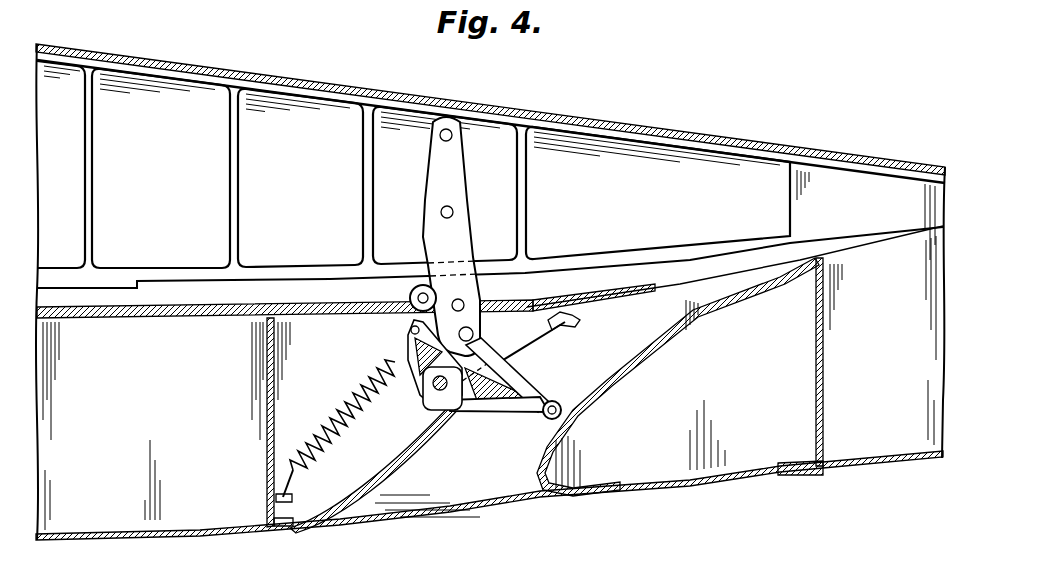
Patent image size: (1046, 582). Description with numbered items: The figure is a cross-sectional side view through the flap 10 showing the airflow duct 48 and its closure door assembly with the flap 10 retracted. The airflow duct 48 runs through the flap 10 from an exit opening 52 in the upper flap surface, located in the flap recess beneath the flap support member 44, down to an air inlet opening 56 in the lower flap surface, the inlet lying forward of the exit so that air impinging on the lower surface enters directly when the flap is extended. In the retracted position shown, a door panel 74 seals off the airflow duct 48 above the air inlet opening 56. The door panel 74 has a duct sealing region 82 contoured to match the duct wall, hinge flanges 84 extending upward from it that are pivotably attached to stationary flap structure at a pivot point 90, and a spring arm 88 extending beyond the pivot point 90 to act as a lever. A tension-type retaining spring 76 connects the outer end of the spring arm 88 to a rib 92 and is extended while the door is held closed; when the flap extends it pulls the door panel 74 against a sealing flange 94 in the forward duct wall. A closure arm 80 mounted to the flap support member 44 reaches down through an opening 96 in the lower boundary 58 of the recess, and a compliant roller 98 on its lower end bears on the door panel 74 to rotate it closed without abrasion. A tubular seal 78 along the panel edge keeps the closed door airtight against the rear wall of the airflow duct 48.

The flap 10 is at (235, 537).
The flap support member 44 is at (610, 142).
The airflow duct 48 is at (490, 480).
The exit opening 52 is at (712, 282).
The air inlet opening 56 is at (515, 508).
The lower boundary of flap recess 58 is at (325, 305).
The door panel 74 is at (477, 413).
The retaining spring 76 is at (322, 478).
The seal 78 is at (550, 408).
The closure arm 80 is at (458, 218).
The duct sealing region 82 is at (508, 417).
The hinge flanges 84 is at (427, 393).
The spring arm 88 is at (417, 378).
The pivot point 90 is at (415, 355).
The rib 92 is at (275, 400).
The sealing flange 94 is at (560, 320).
The opening 96 is at (485, 302).
The roller 98 is at (508, 380).